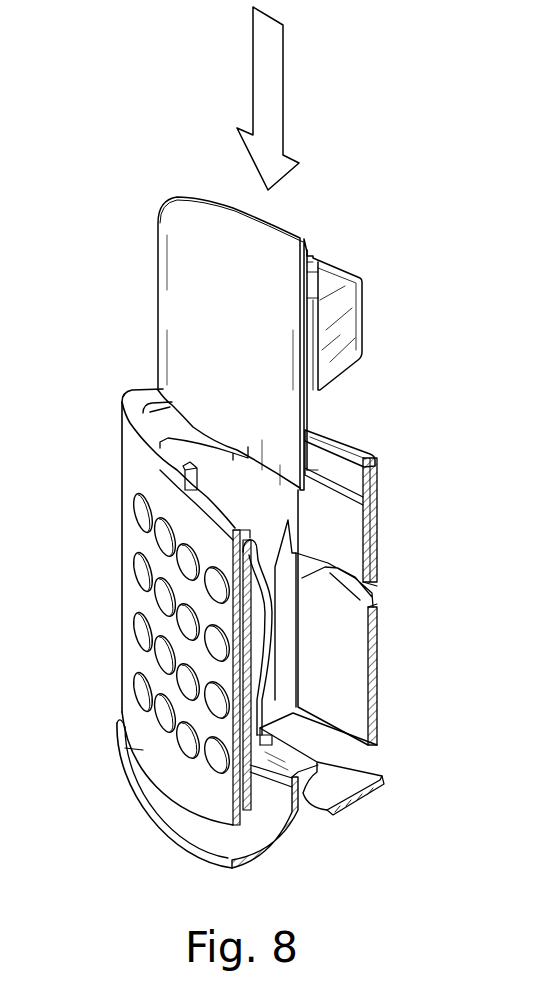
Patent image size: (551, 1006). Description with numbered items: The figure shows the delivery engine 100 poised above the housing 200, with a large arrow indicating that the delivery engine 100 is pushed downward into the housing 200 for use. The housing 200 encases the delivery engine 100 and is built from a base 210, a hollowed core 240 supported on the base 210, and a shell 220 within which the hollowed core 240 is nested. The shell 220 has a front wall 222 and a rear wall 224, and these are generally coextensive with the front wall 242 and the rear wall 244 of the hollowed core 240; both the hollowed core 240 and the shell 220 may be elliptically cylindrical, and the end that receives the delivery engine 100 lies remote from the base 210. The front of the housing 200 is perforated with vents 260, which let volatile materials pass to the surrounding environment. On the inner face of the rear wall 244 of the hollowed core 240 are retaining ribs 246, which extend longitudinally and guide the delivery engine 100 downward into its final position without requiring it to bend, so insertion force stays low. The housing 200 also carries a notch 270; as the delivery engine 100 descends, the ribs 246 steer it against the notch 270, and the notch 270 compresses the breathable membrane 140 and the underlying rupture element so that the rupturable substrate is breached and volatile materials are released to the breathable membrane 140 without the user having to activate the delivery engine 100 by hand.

The delivery engine 100 is at (348, 226).
The breathable membrane 140 is at (190, 295).
The housing 200 is at (378, 434).
The base 210 is at (338, 788).
The shell 220 is at (378, 522).
The front wall 222 is at (215, 852).
The rear wall 224 is at (364, 487).
The hollowed core 240 is at (344, 531).
The front wall 242 is at (284, 820).
The rear wall 244 is at (350, 562).
The retaining ribs 246 is at (167, 453).
The vents 260 is at (138, 570).
The notch 270 is at (257, 617).